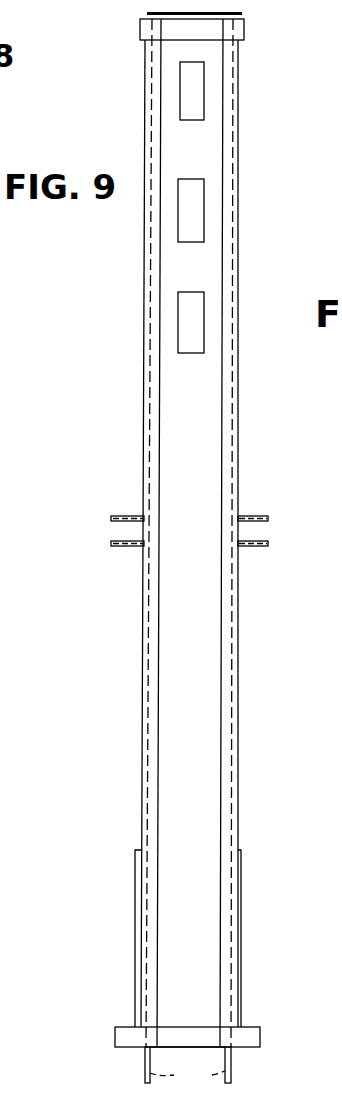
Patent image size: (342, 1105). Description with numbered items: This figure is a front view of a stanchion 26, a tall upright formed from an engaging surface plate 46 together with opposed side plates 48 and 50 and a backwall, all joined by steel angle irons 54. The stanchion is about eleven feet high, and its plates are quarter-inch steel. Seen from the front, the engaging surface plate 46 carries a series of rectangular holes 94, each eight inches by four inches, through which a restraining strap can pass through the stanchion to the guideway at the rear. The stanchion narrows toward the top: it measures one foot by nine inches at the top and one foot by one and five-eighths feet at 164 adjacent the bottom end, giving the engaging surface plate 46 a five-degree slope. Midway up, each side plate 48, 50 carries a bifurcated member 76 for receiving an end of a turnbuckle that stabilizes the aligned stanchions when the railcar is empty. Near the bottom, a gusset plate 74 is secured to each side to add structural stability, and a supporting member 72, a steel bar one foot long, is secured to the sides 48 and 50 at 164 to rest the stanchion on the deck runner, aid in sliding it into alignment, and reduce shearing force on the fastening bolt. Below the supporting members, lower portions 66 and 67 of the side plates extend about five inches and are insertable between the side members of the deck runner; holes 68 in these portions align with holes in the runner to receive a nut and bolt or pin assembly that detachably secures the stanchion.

The stanchion 26 is at (250, 60).
The engaging surface plate 46 is at (207, 611).
The side plate 48 is at (252, 449).
The side plate 50 is at (138, 455).
The angle irons 54 is at (152, 356).
The lower portion of side plate 66 is at (232, 1080).
The lower portion of side plate 67 is at (145, 1080).
The holes 68 is at (187, 1077).
The supporting member 72 is at (115, 1032).
The gusset plate 74 is at (135, 918).
The bifurcated member 76 is at (105, 531).
The holes 94 is at (188, 105).
The location adjacent bottom end 164 is at (224, 1050).